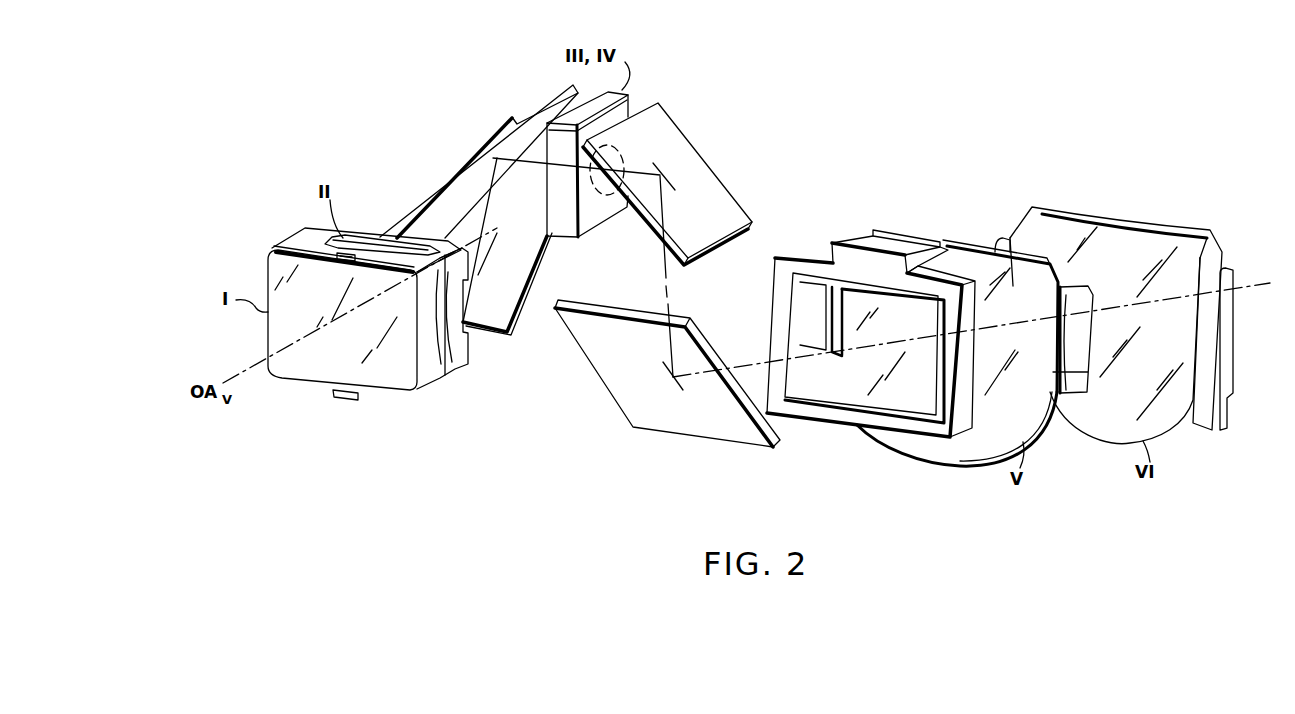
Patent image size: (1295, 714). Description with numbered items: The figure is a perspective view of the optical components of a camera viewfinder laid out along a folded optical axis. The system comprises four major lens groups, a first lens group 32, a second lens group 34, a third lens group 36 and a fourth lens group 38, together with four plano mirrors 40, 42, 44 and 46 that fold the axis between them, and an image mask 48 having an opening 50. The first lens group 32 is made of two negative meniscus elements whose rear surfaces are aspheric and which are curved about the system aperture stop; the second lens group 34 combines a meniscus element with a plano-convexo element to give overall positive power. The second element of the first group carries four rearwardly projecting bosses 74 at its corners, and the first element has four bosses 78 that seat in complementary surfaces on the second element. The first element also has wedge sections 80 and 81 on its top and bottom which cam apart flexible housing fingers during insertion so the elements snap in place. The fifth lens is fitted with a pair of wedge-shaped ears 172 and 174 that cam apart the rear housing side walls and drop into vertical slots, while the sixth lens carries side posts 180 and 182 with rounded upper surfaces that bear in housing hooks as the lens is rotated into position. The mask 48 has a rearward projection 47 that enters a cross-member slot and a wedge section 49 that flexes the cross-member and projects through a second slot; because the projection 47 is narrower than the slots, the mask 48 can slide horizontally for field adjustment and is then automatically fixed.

The first lens group 32 is at (372, 292).
The second lens group 34 is at (663, 74).
The third lens group 36 is at (894, 313).
The fourth lens group 38 is at (1141, 295).
The plano mirror 40 is at (528, 303).
The plano mirror 42 is at (480, 143).
The plano mirror 44 is at (705, 165).
The plano mirror 46 is at (703, 336).
The rearward projection 47 is at (858, 240).
The image mask 48 is at (808, 258).
The wedge section 49 is at (907, 237).
The opening 50 is at (825, 412).
The bosses 74 is at (468, 350).
The bosses 78 is at (445, 372).
The wedge section 80 is at (339, 260).
The wedge section 81 is at (350, 399).
The wedge-shaped ear 172 is at (1070, 365).
The wedge-shaped ear 174 is at (828, 308).
The side post 180 is at (1226, 363).
The side post 182 is at (1000, 245).